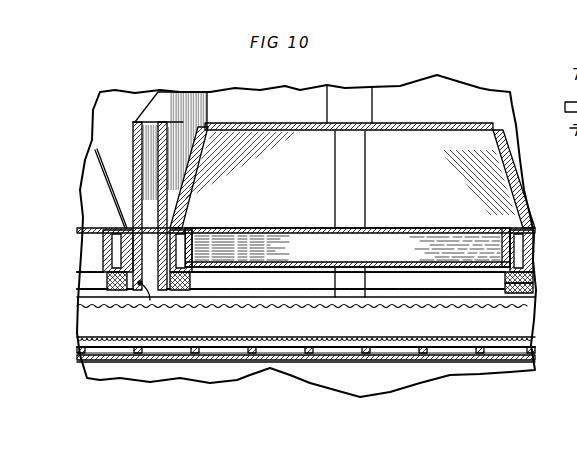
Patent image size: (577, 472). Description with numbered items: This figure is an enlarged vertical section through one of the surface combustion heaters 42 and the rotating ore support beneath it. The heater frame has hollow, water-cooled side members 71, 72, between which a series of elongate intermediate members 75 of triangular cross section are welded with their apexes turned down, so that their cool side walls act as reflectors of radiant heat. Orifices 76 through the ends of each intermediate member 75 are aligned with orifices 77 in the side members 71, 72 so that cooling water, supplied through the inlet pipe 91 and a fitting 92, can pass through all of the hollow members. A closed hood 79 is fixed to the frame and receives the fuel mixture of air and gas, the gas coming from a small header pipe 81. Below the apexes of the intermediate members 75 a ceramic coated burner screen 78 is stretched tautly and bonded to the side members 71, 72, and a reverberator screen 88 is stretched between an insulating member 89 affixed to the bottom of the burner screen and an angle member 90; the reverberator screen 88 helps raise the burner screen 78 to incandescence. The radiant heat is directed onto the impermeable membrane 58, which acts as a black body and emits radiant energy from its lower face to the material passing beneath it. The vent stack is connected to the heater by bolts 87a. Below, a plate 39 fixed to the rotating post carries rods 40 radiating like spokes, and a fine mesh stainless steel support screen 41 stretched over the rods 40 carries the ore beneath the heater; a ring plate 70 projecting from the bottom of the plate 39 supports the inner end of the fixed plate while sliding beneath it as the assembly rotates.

The closed hood 79 is at (96, 152).
The header pipe 81 is at (150, 168).
The surface combustion heater 42 is at (266, 110).
The side member 72 is at (187, 226).
The side member 71 is at (516, 222).
The intermediate member 75 is at (260, 228).
The orifice 76 is at (208, 243).
The orifice 77 is at (178, 246).
The insulating member 89 is at (530, 277).
The angle member 90 is at (171, 296).
The bolt 87a is at (150, 300).
The reverberator screen 88 is at (448, 282).
The burner screen 78 is at (400, 305).
The impermeable membrane 58 is at (289, 306).
The support screen 41 is at (233, 340).
The plate 39 is at (323, 356).
The rod 40 is at (300, 364).
The ring plate 70 is at (365, 359).
The inlet pipe 91 is at (574, 100).
The fitting 92 is at (567, 116).